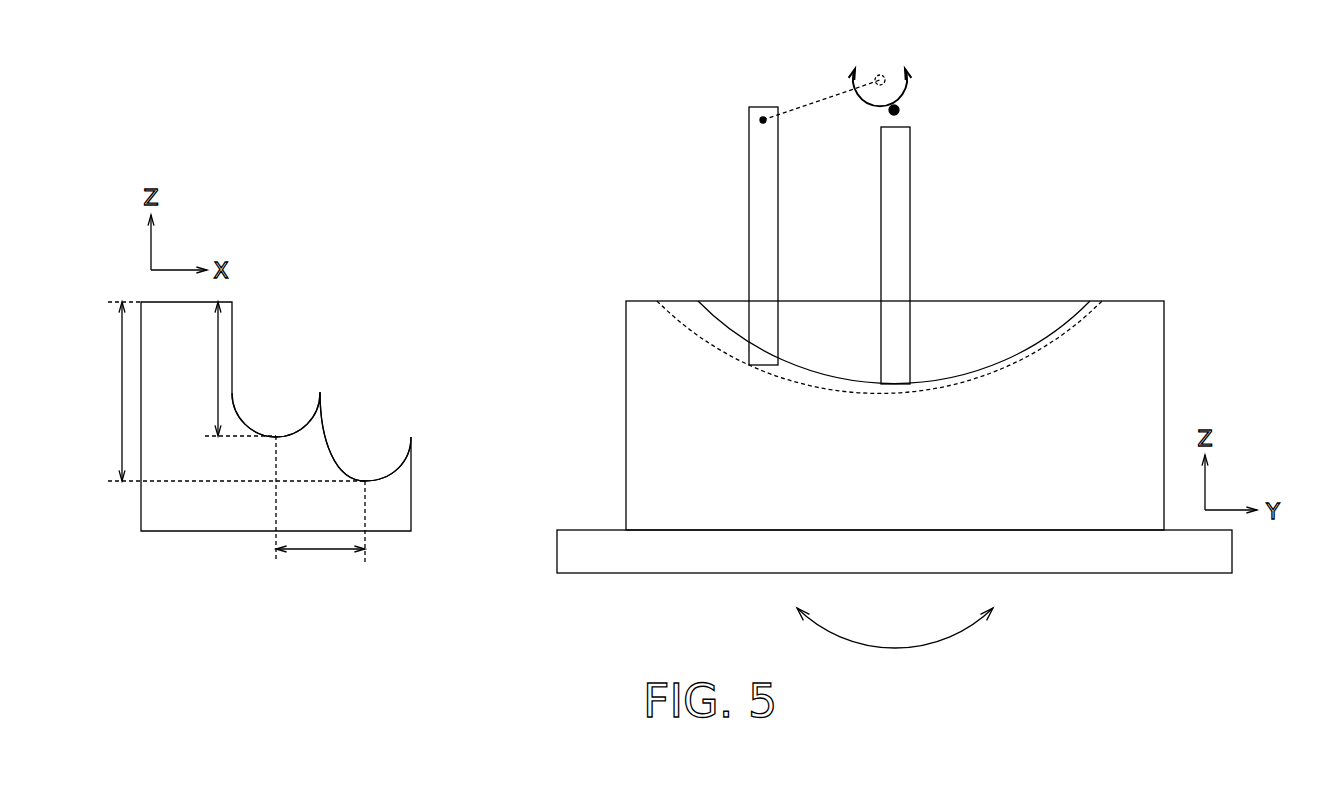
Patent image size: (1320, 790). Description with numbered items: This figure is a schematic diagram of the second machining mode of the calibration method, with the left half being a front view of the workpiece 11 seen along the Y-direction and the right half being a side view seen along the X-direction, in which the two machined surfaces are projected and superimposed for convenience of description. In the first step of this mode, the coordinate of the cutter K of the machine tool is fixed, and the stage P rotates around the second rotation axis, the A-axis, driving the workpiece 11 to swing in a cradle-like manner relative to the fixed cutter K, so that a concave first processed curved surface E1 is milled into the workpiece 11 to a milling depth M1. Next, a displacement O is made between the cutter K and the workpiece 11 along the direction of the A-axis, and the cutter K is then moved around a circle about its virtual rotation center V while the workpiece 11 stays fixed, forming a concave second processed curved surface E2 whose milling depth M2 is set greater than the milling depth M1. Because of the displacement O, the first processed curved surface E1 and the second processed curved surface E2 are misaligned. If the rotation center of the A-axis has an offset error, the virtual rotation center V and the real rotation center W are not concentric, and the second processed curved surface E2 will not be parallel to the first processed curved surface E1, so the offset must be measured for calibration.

The workpiece 11 is at (160, 312).
The first processed curved surface E1 is at (276, 436).
The second processed curved surface E2 is at (365, 481).
The milling depth M1 is at (227, 369).
The milling depth M2 is at (223, 391).
The displacement O is at (320, 512).
The cutter K is at (762, 160).
The virtual rotation center V is at (880, 75).
The real rotation center W is at (900, 109).
The stage P is at (1210, 556).